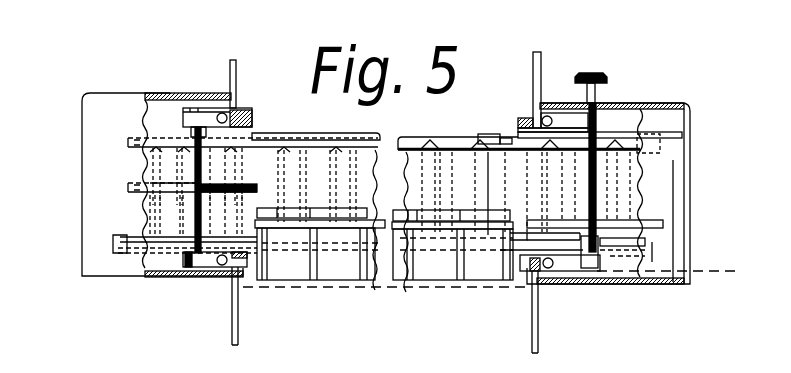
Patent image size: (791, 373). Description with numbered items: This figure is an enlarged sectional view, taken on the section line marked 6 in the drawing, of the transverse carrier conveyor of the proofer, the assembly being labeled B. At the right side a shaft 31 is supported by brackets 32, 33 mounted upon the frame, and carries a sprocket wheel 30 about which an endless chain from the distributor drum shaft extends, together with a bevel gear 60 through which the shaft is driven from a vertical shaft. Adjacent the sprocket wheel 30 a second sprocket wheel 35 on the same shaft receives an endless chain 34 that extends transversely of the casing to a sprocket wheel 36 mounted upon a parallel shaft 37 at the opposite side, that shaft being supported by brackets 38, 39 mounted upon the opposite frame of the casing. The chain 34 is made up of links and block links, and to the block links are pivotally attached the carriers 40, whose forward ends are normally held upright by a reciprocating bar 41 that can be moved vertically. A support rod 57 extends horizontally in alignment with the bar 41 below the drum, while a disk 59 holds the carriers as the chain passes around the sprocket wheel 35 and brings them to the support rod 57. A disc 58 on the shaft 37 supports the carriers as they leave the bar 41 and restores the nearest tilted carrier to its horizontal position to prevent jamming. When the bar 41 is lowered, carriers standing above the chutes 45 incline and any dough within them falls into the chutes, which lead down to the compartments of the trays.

The sprocket wheel 30 is at (622, 137).
The shaft 31 is at (598, 95).
The bracket 32 is at (560, 125).
The bracket 33 is at (570, 262).
The endless chain 34 is at (490, 144).
The sprocket wheel 35 is at (660, 143).
The sprocket wheel 36 is at (128, 143).
The shaft 37 is at (192, 135).
The bracket 38 is at (208, 117).
The bracket 39 is at (212, 262).
The carrier 40 is at (320, 173).
The reciprocating bar 41 is at (500, 262).
The chute 45 is at (343, 268).
The support rod 57 is at (635, 248).
The disc 58 is at (128, 188).
The disk 59 is at (623, 227).
The bevel gear 60 is at (591, 73).
The section line 6- 6 is at (175, 267).
The assembly B is at (467, 48).